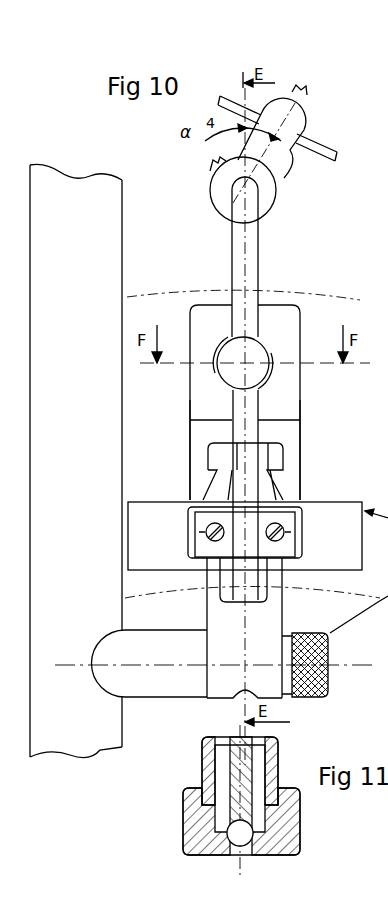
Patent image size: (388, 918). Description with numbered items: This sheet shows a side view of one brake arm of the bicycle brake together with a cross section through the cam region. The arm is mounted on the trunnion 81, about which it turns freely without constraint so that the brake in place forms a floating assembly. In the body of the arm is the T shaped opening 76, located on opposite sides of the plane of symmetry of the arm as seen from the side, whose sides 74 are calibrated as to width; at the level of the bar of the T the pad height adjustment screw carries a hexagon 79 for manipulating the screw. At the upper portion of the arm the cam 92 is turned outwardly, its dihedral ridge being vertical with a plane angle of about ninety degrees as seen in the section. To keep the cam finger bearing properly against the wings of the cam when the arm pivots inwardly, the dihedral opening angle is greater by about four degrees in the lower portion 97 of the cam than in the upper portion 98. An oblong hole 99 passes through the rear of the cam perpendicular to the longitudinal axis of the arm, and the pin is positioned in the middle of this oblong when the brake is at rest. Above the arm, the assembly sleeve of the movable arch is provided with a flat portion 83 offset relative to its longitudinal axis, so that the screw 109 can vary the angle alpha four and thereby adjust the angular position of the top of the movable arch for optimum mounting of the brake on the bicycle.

The screw 109 is at (212, 163).
The flat portion 83 is at (290, 150).
The hexagon 79 is at (240, 458).
The upper portion of the cam 98 is at (207, 327).
The lower portion of the cam 97 is at (203, 402).
The cam 92 is at (270, 312).
The oblong hole 99 is at (263, 392).
The T shaped opening 76 is at (277, 462).
The sides of the T shaped opening 74 is at (263, 590).
The trunnion 81 is at (165, 683).